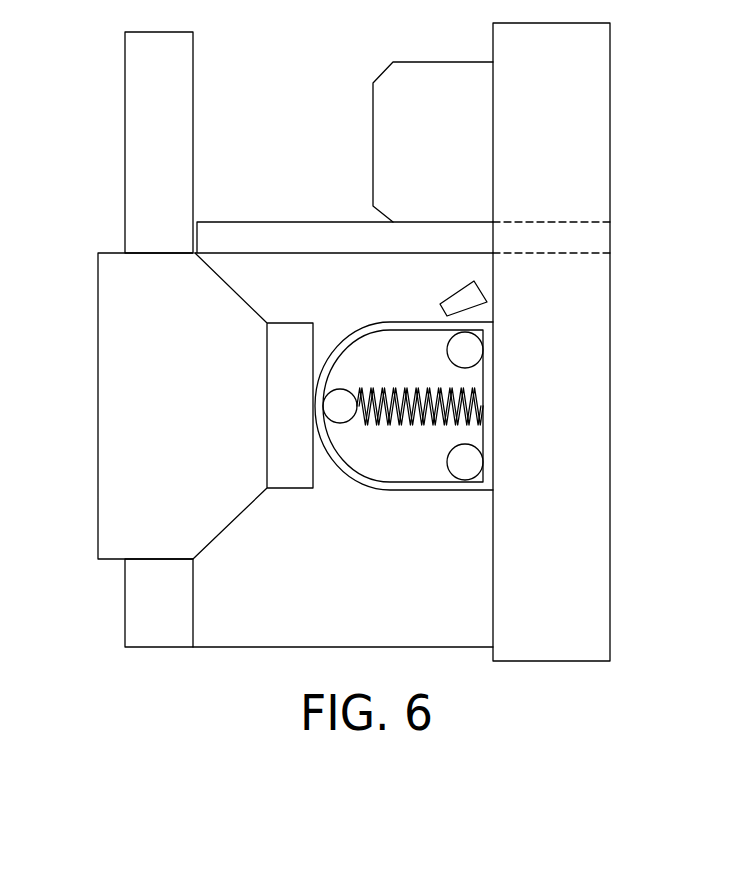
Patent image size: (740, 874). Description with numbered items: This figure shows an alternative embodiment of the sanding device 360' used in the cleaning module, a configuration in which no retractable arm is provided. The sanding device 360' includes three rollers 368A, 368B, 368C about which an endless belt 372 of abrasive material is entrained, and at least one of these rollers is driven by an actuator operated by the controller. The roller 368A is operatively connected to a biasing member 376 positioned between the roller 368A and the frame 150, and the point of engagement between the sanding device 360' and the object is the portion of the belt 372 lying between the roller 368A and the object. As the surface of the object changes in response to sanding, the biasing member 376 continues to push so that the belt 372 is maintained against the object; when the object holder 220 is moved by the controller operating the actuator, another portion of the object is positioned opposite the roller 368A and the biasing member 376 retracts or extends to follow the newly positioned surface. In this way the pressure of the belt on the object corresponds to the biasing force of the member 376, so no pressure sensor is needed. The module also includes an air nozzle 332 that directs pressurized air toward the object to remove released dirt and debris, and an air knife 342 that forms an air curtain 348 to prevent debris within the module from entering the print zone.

The frame 150 is at (610, 418).
The object holder 220 is at (98, 282).
The air nozzle 332 is at (453, 298).
The air knife 342 is at (610, 238).
The air curtain 348 is at (327, 232).
The sanding device 360' is at (403, 473).
The roller 368A is at (340, 405).
The roller 368B is at (466, 350).
The roller 368C is at (466, 462).
The endless belt 372 is at (358, 478).
The biasing member 376 is at (475, 403).